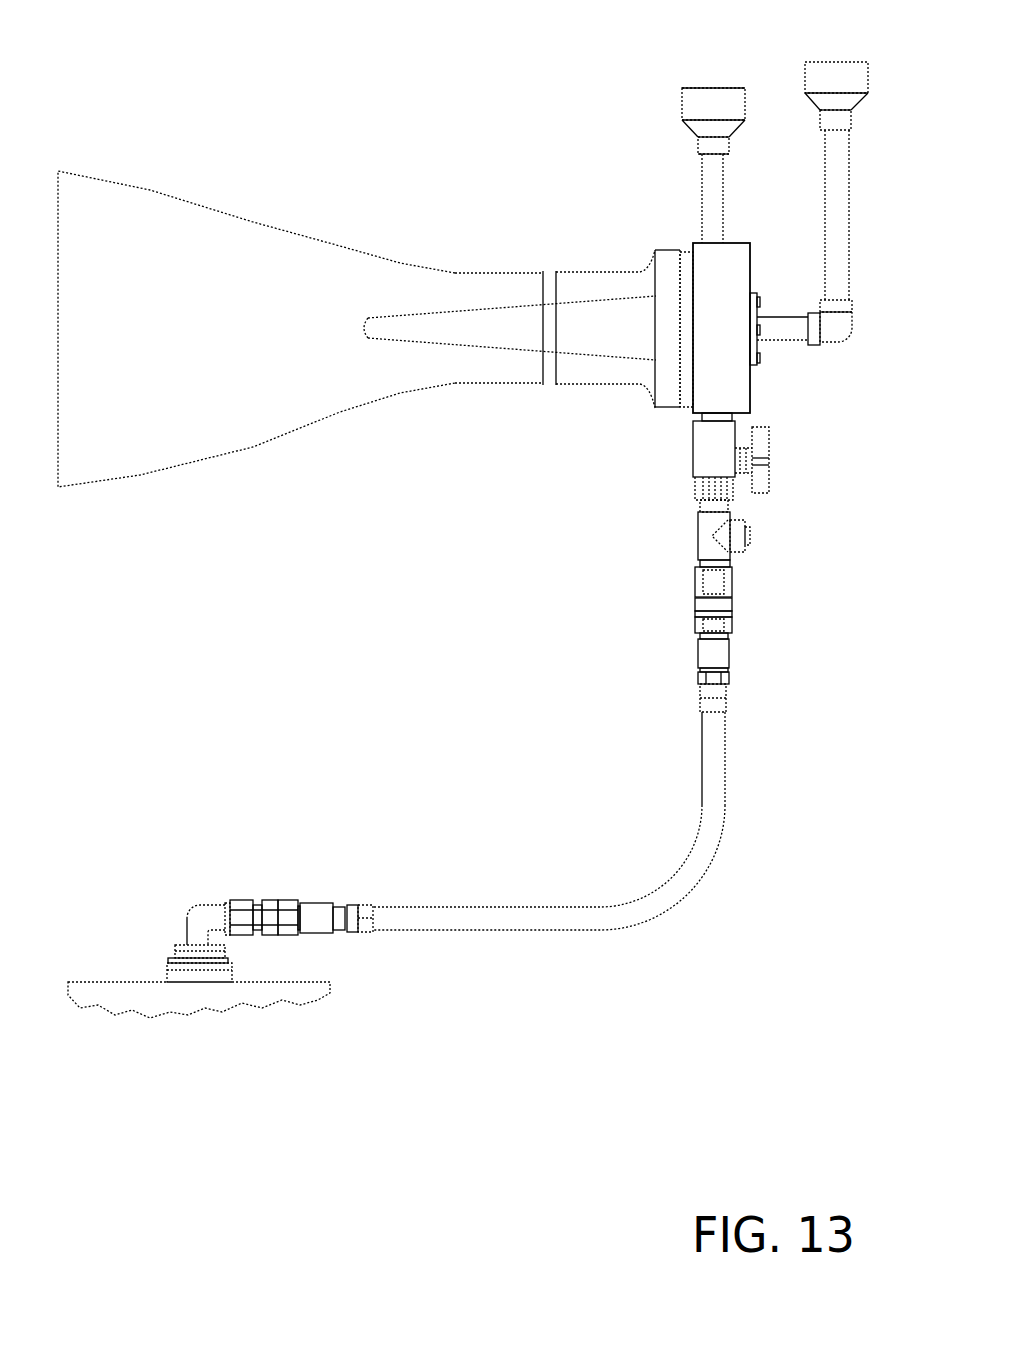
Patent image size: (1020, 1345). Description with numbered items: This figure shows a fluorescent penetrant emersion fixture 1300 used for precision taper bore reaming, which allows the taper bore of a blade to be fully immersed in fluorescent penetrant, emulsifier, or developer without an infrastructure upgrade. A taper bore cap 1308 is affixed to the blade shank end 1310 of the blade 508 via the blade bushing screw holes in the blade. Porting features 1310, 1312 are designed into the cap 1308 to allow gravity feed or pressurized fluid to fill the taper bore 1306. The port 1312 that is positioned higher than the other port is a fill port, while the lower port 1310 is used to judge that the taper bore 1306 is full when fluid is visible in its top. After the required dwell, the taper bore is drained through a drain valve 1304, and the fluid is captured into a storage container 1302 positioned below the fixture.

The blade 508 is at (256, 329).
The fluorescent penetrant emersion fixture 1300 is at (481, 834).
The storage container 1302 is at (143, 962).
The drain valve 1304 is at (753, 478).
The taper bore 1306 is at (518, 325).
The taper bore cap 1308 is at (723, 367).
The lower port 1310 is at (653, 146).
The fill port 1312 is at (834, 168).